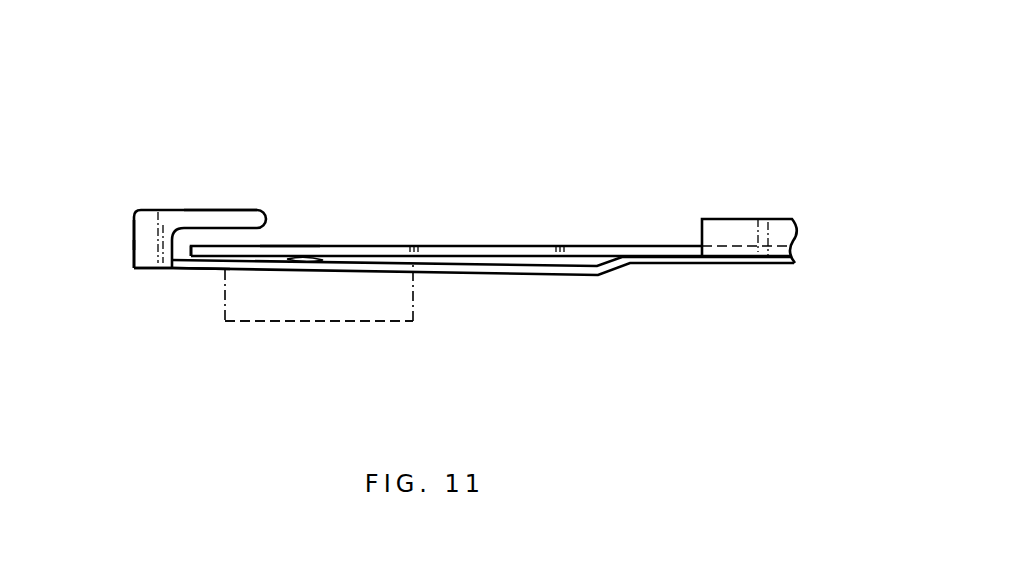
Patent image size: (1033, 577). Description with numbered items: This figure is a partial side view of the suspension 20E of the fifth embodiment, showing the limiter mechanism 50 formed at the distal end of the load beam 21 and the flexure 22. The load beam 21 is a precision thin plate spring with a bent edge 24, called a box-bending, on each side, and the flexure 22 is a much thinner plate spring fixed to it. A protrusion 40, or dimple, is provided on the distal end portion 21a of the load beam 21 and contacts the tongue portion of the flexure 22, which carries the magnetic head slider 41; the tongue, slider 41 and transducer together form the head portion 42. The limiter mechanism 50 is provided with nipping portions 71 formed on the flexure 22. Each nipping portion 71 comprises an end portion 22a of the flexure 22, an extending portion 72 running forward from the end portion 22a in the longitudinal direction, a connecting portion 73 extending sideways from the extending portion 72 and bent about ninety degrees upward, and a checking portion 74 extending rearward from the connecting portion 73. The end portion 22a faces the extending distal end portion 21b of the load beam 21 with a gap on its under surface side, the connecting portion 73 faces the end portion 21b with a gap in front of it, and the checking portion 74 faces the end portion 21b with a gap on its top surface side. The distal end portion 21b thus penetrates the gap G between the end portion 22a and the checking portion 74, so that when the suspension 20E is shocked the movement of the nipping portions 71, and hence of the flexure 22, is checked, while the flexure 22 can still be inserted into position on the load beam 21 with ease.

The suspension 20E is at (633, 188).
The load beam 21 is at (800, 227).
The distal end portion of the load beam 21a is at (280, 241).
The extending distal end portion of the load beam 21b is at (203, 248).
The flexure 22 is at (665, 268).
The end portion of the flexure 22a is at (193, 268).
The bent edge 24 is at (749, 219).
The protrusion 40 is at (308, 264).
The magnetic head slider 41 is at (390, 323).
The head portion 42 is at (271, 333).
The limiter mechanism 50 is at (148, 196).
The nipping portion 71 is at (130, 256).
The extending portion 72 is at (153, 268).
The connecting portion 73 is at (147, 238).
The checking portion 74 is at (250, 208).
The gap G is at (222, 237).